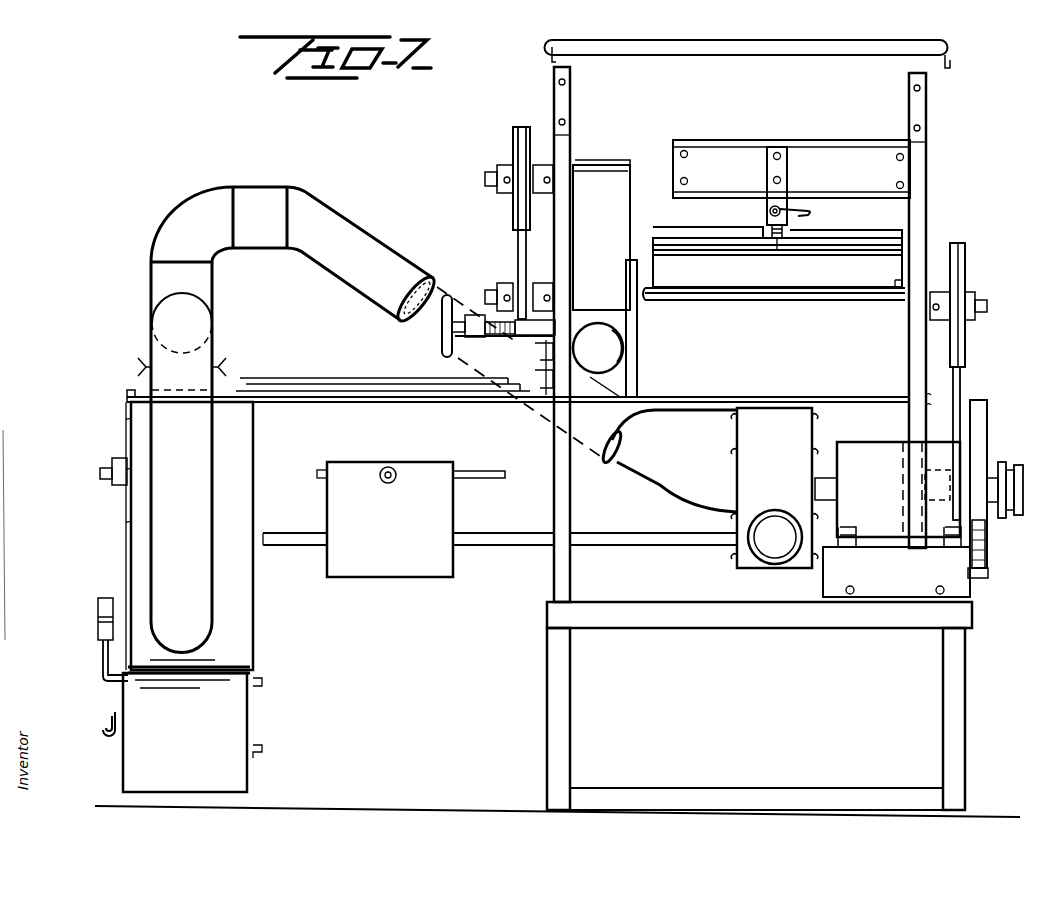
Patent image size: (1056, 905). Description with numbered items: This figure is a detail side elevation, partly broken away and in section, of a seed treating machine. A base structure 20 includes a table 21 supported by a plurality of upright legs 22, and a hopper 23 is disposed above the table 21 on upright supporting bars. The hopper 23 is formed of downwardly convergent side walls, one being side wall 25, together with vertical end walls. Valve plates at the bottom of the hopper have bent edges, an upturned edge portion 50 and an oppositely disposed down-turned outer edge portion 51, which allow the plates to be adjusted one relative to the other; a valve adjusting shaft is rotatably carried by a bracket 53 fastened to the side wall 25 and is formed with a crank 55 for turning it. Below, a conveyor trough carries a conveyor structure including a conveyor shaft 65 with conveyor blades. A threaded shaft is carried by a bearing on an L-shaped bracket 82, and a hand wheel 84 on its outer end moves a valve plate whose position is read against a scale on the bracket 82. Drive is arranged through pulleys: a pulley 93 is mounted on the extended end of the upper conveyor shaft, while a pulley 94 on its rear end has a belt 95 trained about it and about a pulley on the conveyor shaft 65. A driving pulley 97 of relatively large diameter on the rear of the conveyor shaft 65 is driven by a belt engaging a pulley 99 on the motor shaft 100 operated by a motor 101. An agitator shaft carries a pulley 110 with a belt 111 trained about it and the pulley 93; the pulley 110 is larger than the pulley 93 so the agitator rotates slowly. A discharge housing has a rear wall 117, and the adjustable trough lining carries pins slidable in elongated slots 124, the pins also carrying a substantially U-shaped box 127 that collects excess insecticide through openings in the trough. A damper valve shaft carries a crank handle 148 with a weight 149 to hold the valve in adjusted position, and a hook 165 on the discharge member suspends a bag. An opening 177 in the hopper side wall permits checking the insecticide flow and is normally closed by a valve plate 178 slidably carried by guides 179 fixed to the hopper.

The base structure 20 is at (541, 620).
The table 21 is at (625, 603).
The upright legs 22 is at (570, 707).
The hopper 23 is at (939, 213).
The side wall 25 is at (747, 82).
The upturned edge portion 50 is at (785, 243).
The down-turned outer edge portion 51 is at (700, 248).
The bracket 53 is at (788, 171).
The crank 55 is at (814, 208).
The conveyor shaft 65 is at (108, 458).
The L-shaped bracket 82 is at (498, 336).
The hand wheel 84 is at (440, 345).
The pulley 93 is at (512, 280).
The pulley 94 is at (968, 265).
The belt 95 is at (961, 380).
The driving pulley 97 is at (975, 578).
The pulley 99 is at (986, 528).
The motor shaft 100 is at (982, 480).
The motor 101 is at (862, 452).
The pulley 110 is at (512, 140).
The belt 111 is at (516, 246).
The rear wall 117 is at (255, 588).
The elongated slots 124 is at (486, 480).
The U-shaped box 127 is at (375, 576).
The crank handle 148 is at (100, 658).
The weight 149 is at (98, 606).
The hook 165 is at (112, 718).
The opening 177 is at (622, 350).
The valve plate 178 is at (634, 178).
The guides 179 is at (640, 325).